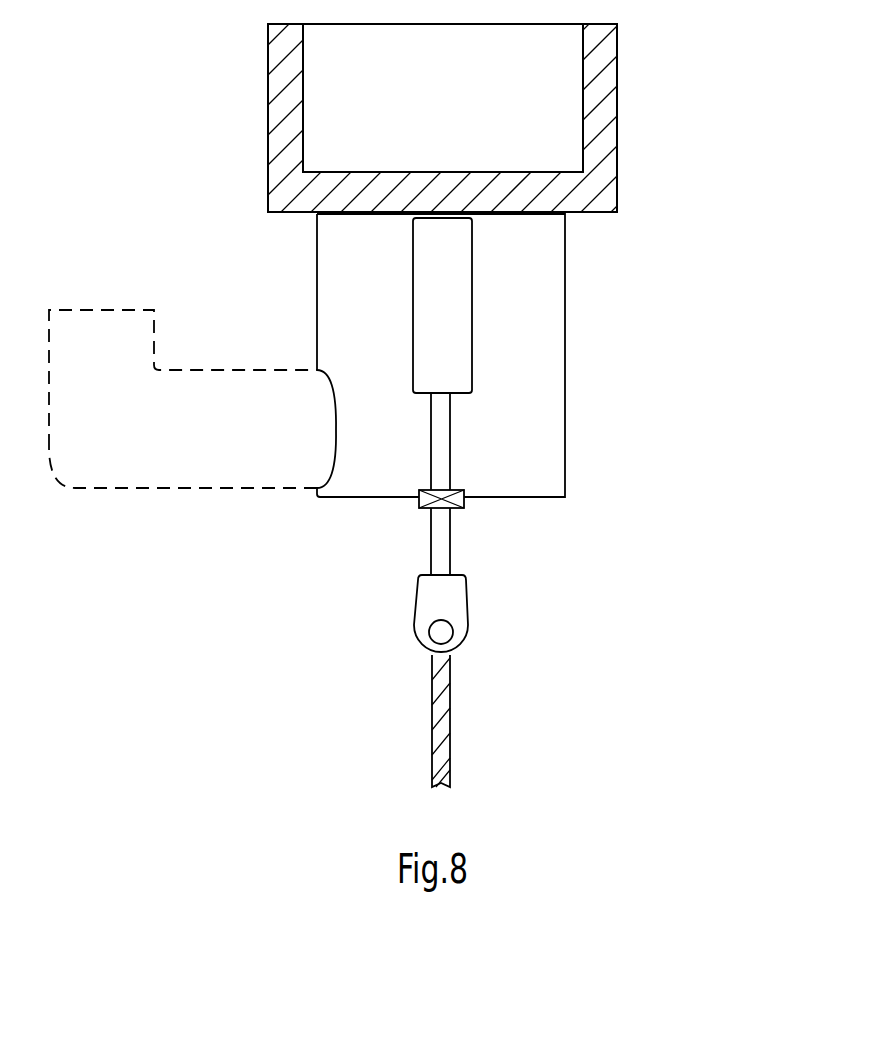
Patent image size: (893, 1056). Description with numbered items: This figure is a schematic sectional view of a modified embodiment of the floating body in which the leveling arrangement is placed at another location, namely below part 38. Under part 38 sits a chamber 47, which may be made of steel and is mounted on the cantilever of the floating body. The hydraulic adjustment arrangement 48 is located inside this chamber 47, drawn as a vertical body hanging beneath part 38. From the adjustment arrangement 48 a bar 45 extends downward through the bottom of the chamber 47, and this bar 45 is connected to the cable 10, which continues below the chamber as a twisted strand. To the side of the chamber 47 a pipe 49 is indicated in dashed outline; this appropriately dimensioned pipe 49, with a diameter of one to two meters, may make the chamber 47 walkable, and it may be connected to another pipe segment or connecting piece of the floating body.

The part 38 is at (607, 112).
The chamber 47 is at (567, 273).
The hydraulic adjustment arrangement 48 is at (482, 350).
The bar 45 is at (438, 458).
The pipe 49 is at (227, 370).
The cable 10 is at (445, 717).